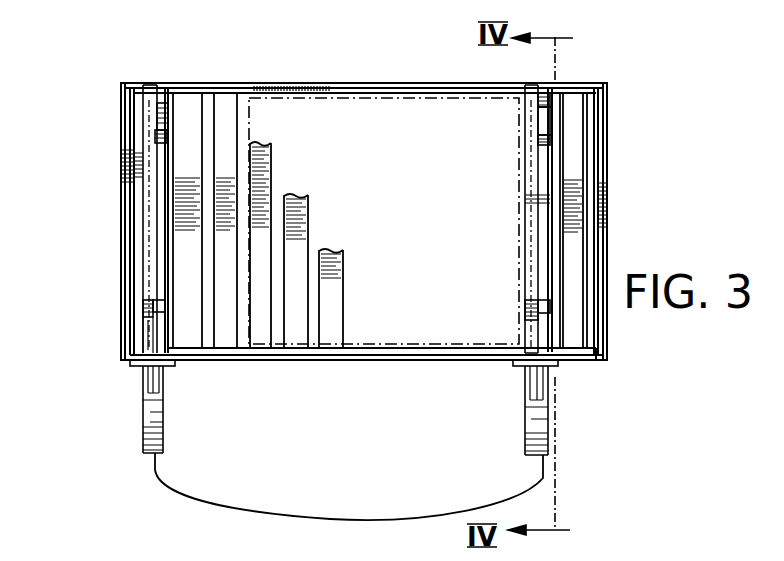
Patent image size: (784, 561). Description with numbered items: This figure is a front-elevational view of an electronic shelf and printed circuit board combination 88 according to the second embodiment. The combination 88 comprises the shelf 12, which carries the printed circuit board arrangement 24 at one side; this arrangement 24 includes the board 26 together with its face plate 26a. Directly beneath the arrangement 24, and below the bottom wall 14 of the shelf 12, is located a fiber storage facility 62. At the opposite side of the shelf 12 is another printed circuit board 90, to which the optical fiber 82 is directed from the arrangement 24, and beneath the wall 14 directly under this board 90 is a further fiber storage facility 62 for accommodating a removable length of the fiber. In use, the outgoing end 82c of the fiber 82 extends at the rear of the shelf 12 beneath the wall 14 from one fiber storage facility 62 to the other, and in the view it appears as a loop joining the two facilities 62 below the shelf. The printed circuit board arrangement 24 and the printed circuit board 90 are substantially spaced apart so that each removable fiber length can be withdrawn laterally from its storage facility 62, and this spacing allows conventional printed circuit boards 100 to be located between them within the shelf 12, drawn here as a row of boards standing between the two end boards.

The shelf 12 is at (279, 79).
The bottom wall 14 is at (437, 352).
The printed circuit board arrangement 24 is at (150, 215).
The board 26 is at (157, 155).
The face plate 26a is at (157, 260).
The fiber storage facility 62 is at (150, 412).
The optical fiber 82 is at (168, 378).
The outgoing end of the fiber 82c is at (388, 518).
The electronic shelf and printed circuit board combination 88 is at (403, 77).
The printed circuit board 90 is at (512, 240).
The conventional printed circuit boards 100 is at (228, 132).